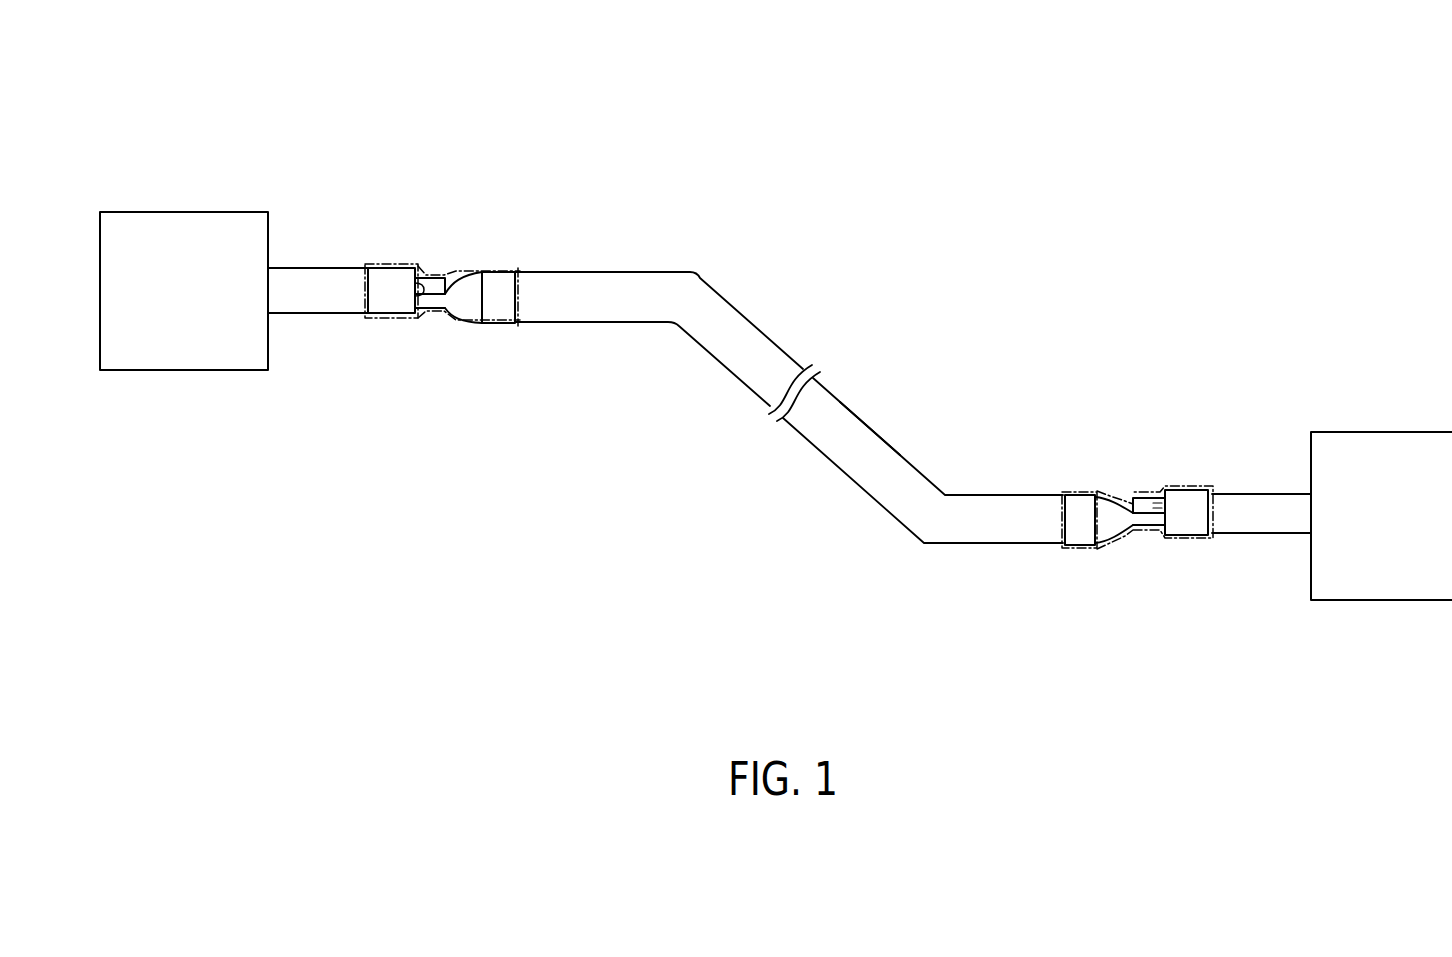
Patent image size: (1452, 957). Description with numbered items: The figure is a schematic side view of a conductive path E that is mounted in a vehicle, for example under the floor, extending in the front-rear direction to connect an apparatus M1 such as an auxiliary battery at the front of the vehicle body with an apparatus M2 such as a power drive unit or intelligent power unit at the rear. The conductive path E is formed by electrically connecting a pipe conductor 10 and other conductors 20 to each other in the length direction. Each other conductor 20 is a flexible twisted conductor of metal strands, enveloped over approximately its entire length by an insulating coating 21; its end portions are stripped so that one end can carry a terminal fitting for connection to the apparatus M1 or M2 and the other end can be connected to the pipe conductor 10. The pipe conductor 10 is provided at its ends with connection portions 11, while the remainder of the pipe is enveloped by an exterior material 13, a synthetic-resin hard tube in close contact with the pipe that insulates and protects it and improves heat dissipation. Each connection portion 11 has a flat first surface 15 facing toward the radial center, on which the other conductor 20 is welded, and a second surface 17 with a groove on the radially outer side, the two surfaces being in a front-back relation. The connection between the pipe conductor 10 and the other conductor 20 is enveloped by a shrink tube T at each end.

The apparatus M1 is at (192, 230).
The apparatus M2 is at (1378, 445).
The conductive path E is at (777, 121).
The pipe conductor 10 is at (766, 293).
The connection portion 11 is at (1147, 525).
The exterior material 13 is at (878, 440).
The first surface 15 is at (415, 288).
The second surface 17 is at (432, 310).
The other conductor 20 is at (432, 287).
The insulating coating 21 is at (325, 275).
The shrink tube T is at (498, 285).